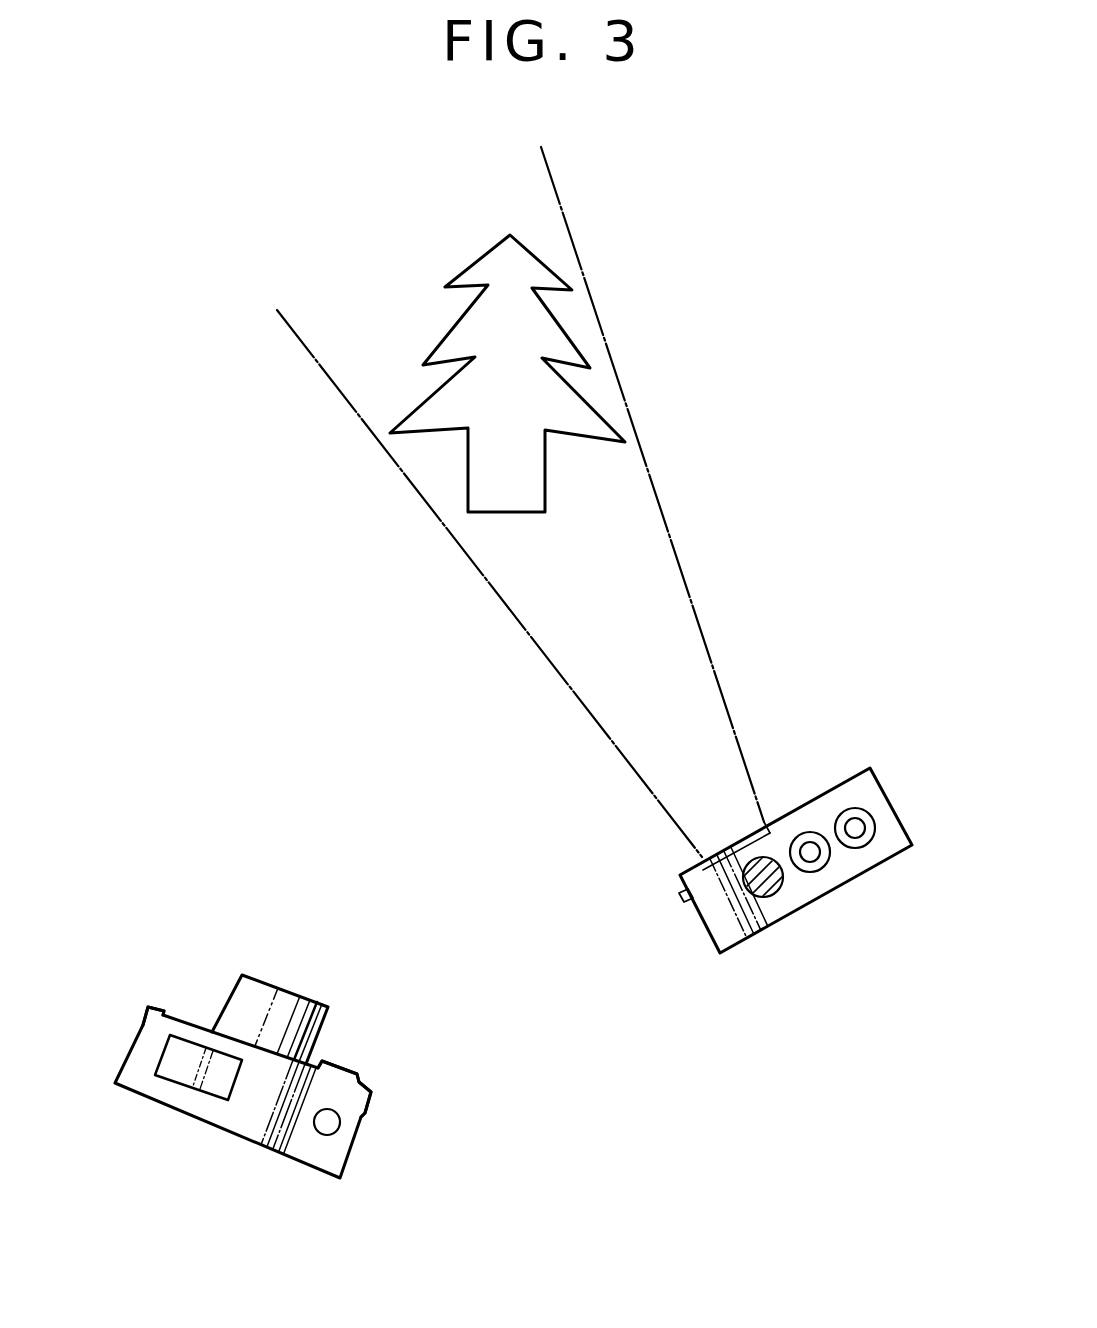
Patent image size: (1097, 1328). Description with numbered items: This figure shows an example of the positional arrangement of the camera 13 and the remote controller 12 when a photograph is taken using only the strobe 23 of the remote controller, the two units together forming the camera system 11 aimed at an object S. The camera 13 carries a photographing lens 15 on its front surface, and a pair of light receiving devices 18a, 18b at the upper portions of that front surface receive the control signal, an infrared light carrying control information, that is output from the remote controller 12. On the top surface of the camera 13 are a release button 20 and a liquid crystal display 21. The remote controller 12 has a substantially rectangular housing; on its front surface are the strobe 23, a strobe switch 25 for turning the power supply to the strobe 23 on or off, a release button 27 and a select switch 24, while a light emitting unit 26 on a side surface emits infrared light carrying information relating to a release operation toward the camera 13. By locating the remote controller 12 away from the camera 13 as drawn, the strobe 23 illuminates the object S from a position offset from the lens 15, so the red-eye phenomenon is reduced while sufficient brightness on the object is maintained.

The subject S is at (443, 348).
The camera system 11 is at (480, 1185).
The remote controller 12 is at (800, 754).
The camera 13 is at (244, 1158).
The photographing lens 15 is at (258, 987).
The light receiving device 18a is at (372, 1106).
The light receiving device 18b is at (145, 1022).
The release button 20 is at (333, 1120).
The liquid crystal display 21 is at (178, 1071).
The strobe 23 is at (727, 840).
The select switch 24 is at (817, 859).
The strobe switch 25 is at (678, 894).
The light emitting unit 26 is at (773, 888).
The release button 27 is at (858, 833).